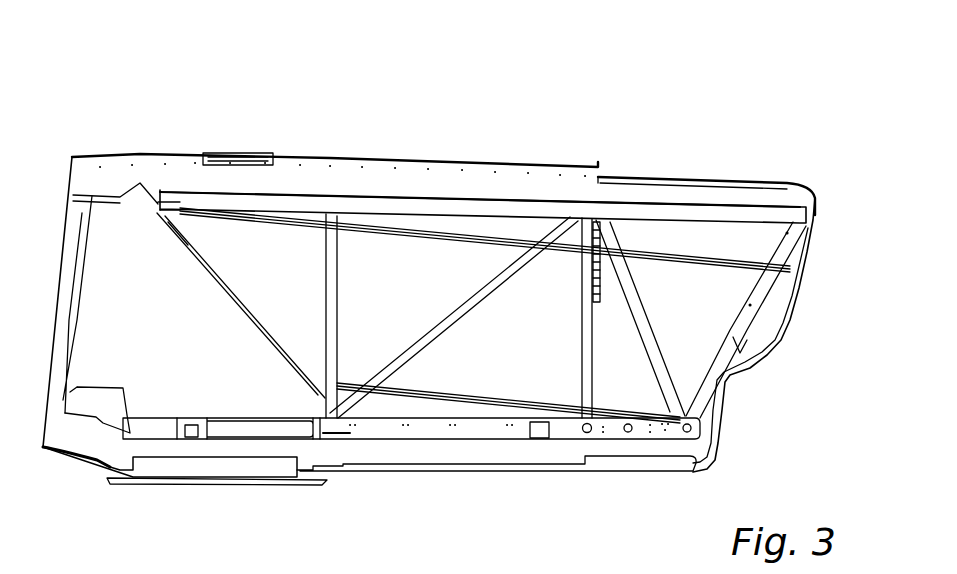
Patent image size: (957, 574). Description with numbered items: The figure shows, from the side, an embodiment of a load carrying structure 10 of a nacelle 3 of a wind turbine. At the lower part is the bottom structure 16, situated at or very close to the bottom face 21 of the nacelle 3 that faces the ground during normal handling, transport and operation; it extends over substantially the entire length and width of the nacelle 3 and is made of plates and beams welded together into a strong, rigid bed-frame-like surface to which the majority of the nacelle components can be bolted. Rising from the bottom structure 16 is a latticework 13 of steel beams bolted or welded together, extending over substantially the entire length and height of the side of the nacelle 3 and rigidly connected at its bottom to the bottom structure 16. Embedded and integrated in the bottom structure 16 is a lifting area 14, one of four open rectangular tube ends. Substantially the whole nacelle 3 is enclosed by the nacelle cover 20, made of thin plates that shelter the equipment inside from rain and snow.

The nacelle 3 is at (715, 97).
The load carrying structure 10 is at (673, 430).
The latticework 13 is at (457, 307).
The lifting area 14 is at (193, 432).
The bottom structure 16 is at (435, 430).
The nacelle cover 20 is at (533, 168).
The bottom face 21 is at (400, 467).